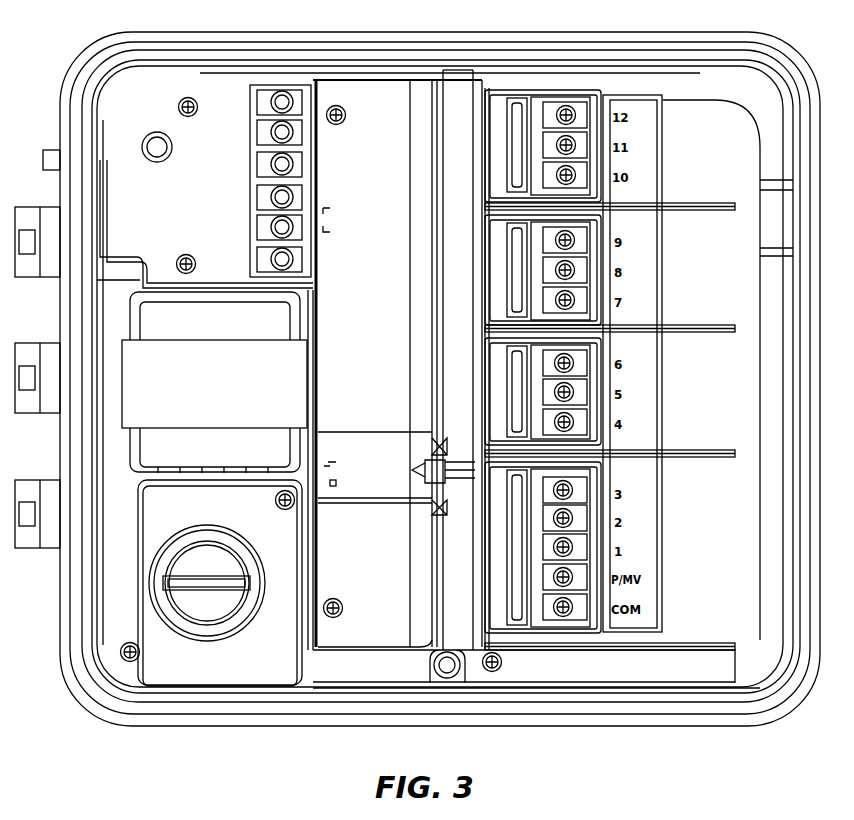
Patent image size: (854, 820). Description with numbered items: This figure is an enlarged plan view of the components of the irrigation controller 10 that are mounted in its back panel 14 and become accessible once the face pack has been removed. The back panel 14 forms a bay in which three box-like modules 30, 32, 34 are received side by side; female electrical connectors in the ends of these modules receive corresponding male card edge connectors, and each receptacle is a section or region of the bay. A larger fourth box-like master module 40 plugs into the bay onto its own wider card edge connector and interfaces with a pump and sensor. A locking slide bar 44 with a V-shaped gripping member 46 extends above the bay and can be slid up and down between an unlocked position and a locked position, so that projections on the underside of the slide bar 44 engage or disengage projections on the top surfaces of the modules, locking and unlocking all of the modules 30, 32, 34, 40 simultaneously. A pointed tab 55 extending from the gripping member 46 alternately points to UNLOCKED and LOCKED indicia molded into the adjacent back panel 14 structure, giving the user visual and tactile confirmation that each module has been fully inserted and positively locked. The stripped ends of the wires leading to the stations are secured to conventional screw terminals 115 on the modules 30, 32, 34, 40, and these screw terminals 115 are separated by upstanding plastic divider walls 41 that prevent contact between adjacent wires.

The irrigation controller 10 is at (125, 740).
The back panel 14 is at (646, 724).
The module 30 is at (582, 392).
The module 32 is at (582, 265).
The module 34 is at (585, 170).
The master module 40 is at (582, 547).
The divider walls 41 is at (600, 97).
The locking slide bar 44 is at (460, 168).
The gripping member 46 is at (440, 490).
The pointed tab 55 is at (430, 487).
The screw terminals 115 is at (577, 145).